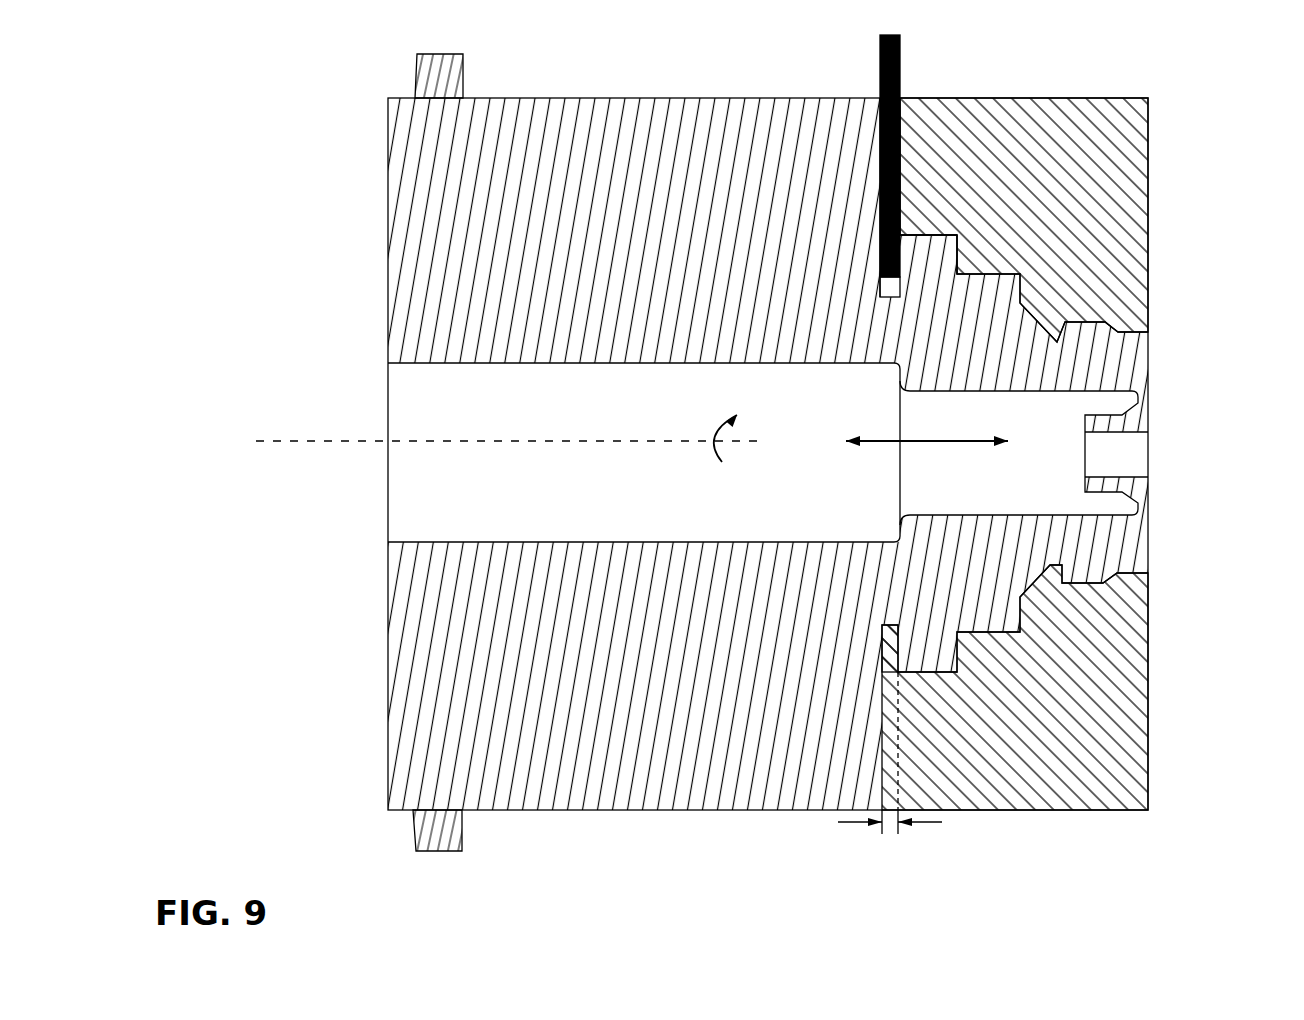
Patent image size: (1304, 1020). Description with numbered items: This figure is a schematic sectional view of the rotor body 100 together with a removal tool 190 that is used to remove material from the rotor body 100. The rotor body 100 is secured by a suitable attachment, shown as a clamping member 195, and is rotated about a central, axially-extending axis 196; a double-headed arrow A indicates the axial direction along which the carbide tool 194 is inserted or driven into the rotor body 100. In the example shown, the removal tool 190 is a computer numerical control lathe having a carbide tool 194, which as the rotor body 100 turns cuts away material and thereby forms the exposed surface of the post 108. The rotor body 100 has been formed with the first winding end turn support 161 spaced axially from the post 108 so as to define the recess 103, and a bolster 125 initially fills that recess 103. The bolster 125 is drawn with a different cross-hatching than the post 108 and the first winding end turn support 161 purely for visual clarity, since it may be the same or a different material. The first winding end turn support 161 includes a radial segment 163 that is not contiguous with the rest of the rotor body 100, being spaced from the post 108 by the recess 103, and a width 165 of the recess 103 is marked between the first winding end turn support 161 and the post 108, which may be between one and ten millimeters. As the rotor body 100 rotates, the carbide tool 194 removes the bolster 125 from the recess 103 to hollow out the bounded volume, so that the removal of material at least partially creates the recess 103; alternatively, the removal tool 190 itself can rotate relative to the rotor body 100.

The rotor body 100 is at (1194, 119).
The recess 103 is at (890, 283).
The post 108 is at (870, 118).
The bolster 125 is at (1040, 138).
The first winding end turn support 161 is at (960, 253).
The radial segment 163 is at (923, 253).
The width 165 is at (930, 823).
The removal tool 190 is at (912, 68).
The carbide tool 194 is at (905, 120).
The clamping member 195 is at (455, 83).
The axis 196 is at (648, 441).
The axial direction A is at (922, 443).